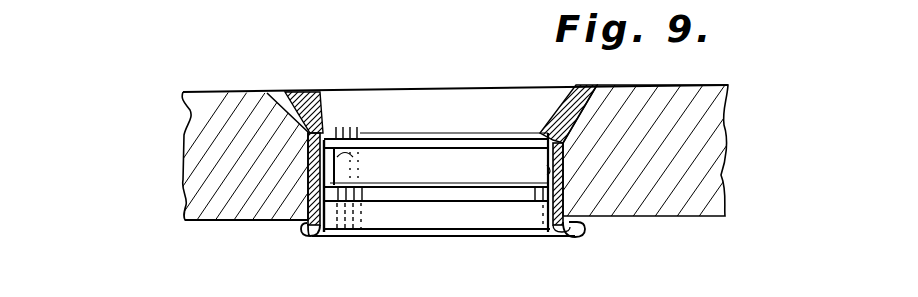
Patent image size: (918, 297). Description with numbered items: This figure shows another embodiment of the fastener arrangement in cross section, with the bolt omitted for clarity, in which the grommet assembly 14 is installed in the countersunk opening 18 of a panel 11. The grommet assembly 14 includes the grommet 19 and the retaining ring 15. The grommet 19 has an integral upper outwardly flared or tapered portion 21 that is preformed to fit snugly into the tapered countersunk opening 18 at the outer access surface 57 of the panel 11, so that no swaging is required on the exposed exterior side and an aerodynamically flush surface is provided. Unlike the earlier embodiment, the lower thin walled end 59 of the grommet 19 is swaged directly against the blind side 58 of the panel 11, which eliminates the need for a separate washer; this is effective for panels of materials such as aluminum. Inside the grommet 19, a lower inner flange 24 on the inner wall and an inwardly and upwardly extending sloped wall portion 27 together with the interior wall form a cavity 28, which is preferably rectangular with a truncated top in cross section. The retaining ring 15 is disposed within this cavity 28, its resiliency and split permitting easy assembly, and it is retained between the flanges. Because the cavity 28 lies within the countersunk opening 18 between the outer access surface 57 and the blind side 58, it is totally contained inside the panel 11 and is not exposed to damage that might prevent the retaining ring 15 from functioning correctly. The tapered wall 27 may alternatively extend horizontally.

The panel 11 is at (710, 160).
The grommet assembly 14 is at (301, 178).
The retaining ring 15 is at (485, 160).
The countersunk opening 18 is at (300, 118).
The grommet 19 is at (570, 138).
The flared portion 21 is at (330, 112).
The lower inner flange 24 is at (357, 198).
The wall portion 27 is at (345, 157).
The cavity 28 is at (548, 170).
The outer access surface 57 is at (202, 92).
The blind side 58 is at (200, 222).
The lower thin walled end 59 is at (567, 235).